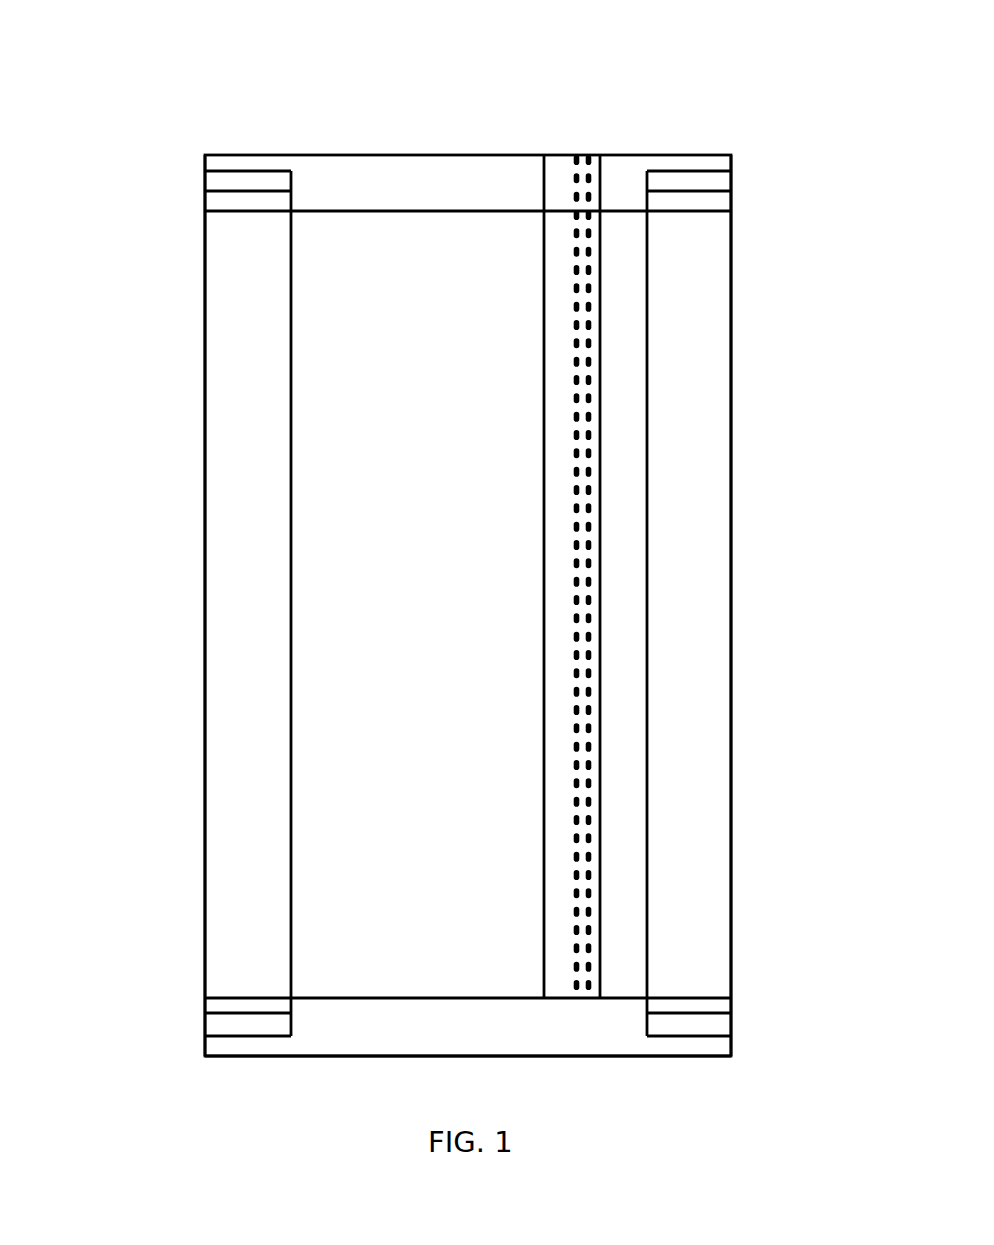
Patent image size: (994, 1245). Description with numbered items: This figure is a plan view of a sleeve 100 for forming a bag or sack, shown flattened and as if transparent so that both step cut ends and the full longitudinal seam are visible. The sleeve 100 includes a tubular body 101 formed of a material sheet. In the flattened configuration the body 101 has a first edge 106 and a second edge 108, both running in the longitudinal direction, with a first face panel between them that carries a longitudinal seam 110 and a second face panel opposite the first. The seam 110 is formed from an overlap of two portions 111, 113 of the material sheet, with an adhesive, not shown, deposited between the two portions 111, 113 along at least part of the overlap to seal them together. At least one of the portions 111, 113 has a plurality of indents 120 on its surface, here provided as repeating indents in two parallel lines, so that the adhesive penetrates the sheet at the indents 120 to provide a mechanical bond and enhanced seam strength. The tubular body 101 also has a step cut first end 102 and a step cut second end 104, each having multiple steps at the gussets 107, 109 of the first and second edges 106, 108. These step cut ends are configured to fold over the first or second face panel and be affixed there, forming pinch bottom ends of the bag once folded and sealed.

The sleeve 100 is at (391, 66).
The tubular body 101 is at (357, 757).
The first end 102 is at (530, 130).
The second end 104 is at (353, 1082).
The first edge 106 is at (732, 268).
The gusset 107 is at (647, 855).
The second edge 108 is at (205, 362).
The gusset 109 is at (291, 948).
The longitudinal seam 110 is at (607, 575).
The portion of the material sheet 111 is at (626, 634).
The portion of the material sheet 113 is at (518, 632).
The indents 120 is at (590, 420).